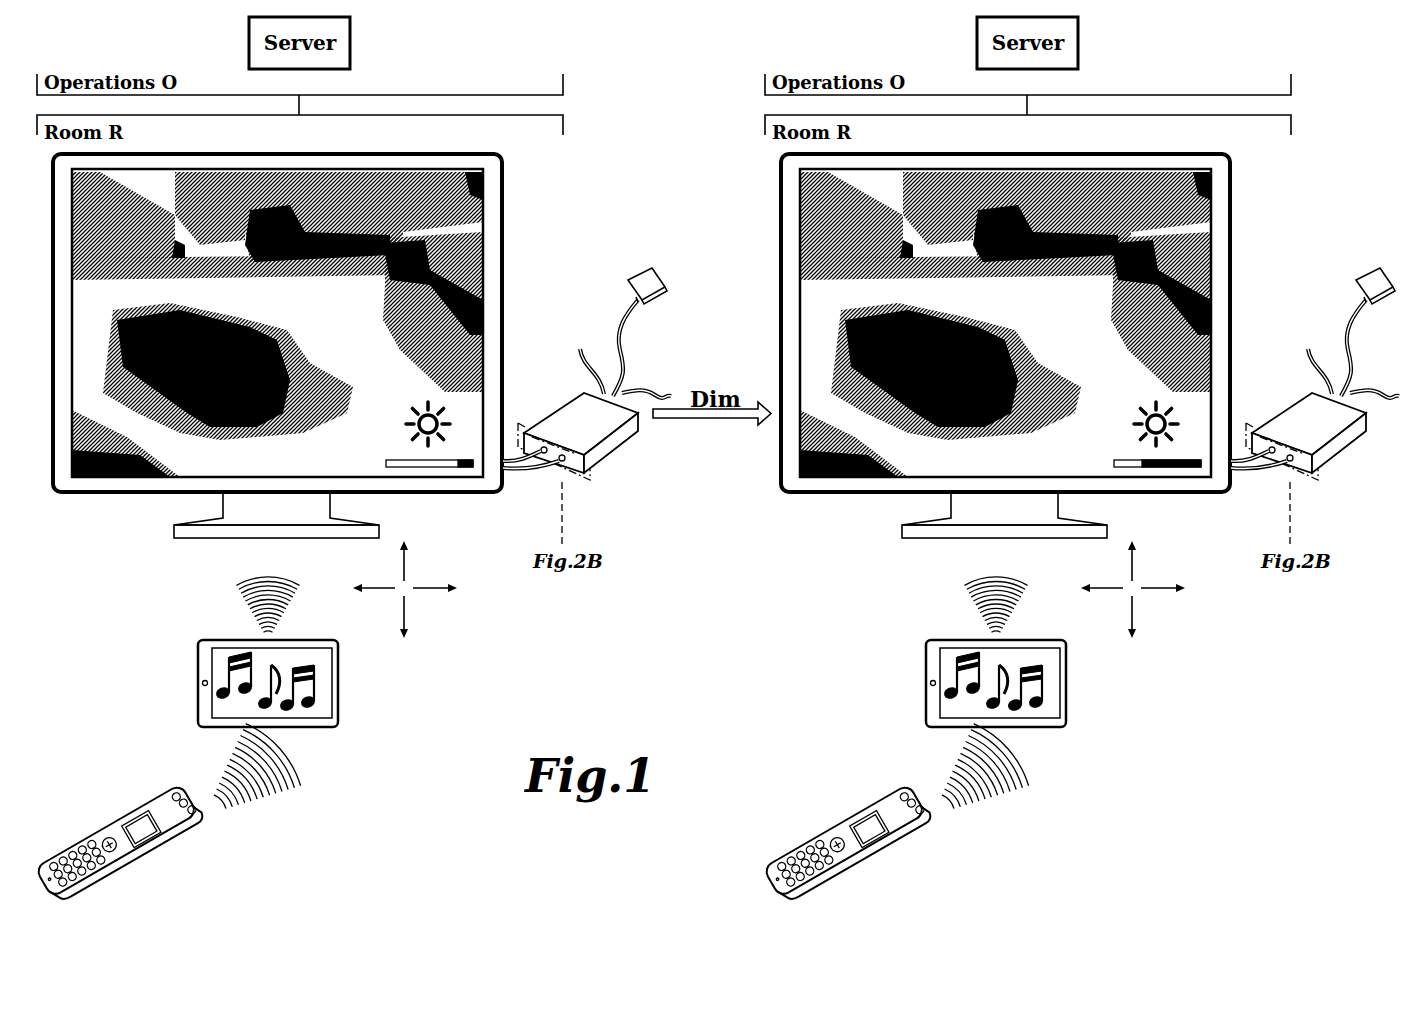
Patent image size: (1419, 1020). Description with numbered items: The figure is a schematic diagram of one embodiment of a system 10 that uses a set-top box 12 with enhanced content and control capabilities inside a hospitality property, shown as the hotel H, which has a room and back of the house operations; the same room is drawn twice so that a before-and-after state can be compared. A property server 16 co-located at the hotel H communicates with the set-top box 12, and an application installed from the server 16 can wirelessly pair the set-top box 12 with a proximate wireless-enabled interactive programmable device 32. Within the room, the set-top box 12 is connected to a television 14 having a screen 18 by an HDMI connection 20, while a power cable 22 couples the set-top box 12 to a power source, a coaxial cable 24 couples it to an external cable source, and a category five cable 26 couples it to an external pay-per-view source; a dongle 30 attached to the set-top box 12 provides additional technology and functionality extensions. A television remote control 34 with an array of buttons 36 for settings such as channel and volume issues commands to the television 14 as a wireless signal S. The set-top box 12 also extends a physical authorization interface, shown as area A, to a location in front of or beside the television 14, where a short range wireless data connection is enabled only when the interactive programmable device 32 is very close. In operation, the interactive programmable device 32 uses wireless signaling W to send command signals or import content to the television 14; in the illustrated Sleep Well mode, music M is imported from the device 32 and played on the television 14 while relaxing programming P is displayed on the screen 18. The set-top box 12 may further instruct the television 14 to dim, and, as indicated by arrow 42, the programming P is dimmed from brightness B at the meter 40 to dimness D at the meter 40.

The system 10 is at (607, 205).
The set-top box 12 is at (615, 443).
The television 14 is at (512, 233).
The property server 16 is at (352, 50).
The screen 18 is at (308, 212).
The HDMI connection 20 is at (527, 472).
The power cable 22 is at (512, 478).
The coaxial cable 24 is at (590, 360).
The category five (Cat 5) cable 26 is at (648, 390).
The dongle 30 is at (655, 266).
The proximate wireless-enabled interactive programmable device 32 is at (348, 667).
The television remote control 34 is at (150, 868).
The array of buttons 36 is at (85, 847).
The meter 40 is at (422, 468).
The arrow 42 is at (710, 419).
The hotel H is at (572, 103).
The relaxing programming P is at (126, 462).
The wireless signaling W is at (283, 578).
The area A is at (769, 589).
The music M is at (314, 697).
The wireless signal S is at (263, 779).
The brightness B is at (457, 468).
The dimness D is at (1185, 468).